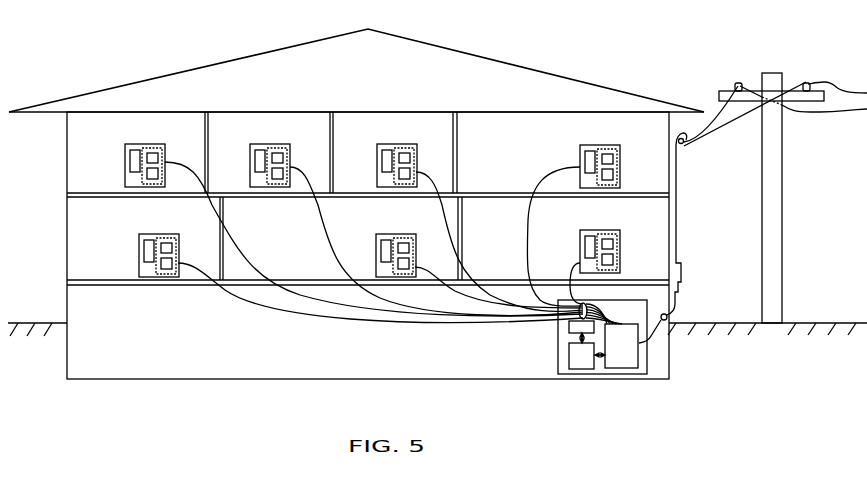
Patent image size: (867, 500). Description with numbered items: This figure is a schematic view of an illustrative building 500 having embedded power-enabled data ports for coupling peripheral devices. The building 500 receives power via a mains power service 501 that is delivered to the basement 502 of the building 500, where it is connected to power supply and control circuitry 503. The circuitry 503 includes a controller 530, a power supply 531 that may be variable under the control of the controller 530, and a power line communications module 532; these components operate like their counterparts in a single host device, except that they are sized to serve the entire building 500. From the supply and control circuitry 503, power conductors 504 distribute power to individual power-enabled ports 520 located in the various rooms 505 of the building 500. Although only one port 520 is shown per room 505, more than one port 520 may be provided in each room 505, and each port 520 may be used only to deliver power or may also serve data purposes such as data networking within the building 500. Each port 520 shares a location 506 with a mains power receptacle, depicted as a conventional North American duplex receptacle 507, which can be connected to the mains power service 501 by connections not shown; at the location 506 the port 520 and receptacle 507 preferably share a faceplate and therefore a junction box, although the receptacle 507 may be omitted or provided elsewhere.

The building 500 is at (405, 38).
The mains power service 501 is at (660, 338).
The basement 502 is at (164, 332).
The power supply and control circuitry 503 is at (558, 363).
The power conductors 504 is at (305, 296).
The rooms 505 is at (99, 135).
The location 506 is at (125, 157).
The duplex receptacle 507 is at (163, 153).
The power-enabled port 520 is at (134, 152).
The controller 530 is at (582, 362).
The power supply 531 is at (615, 362).
The power line communications module 532 is at (568, 327).